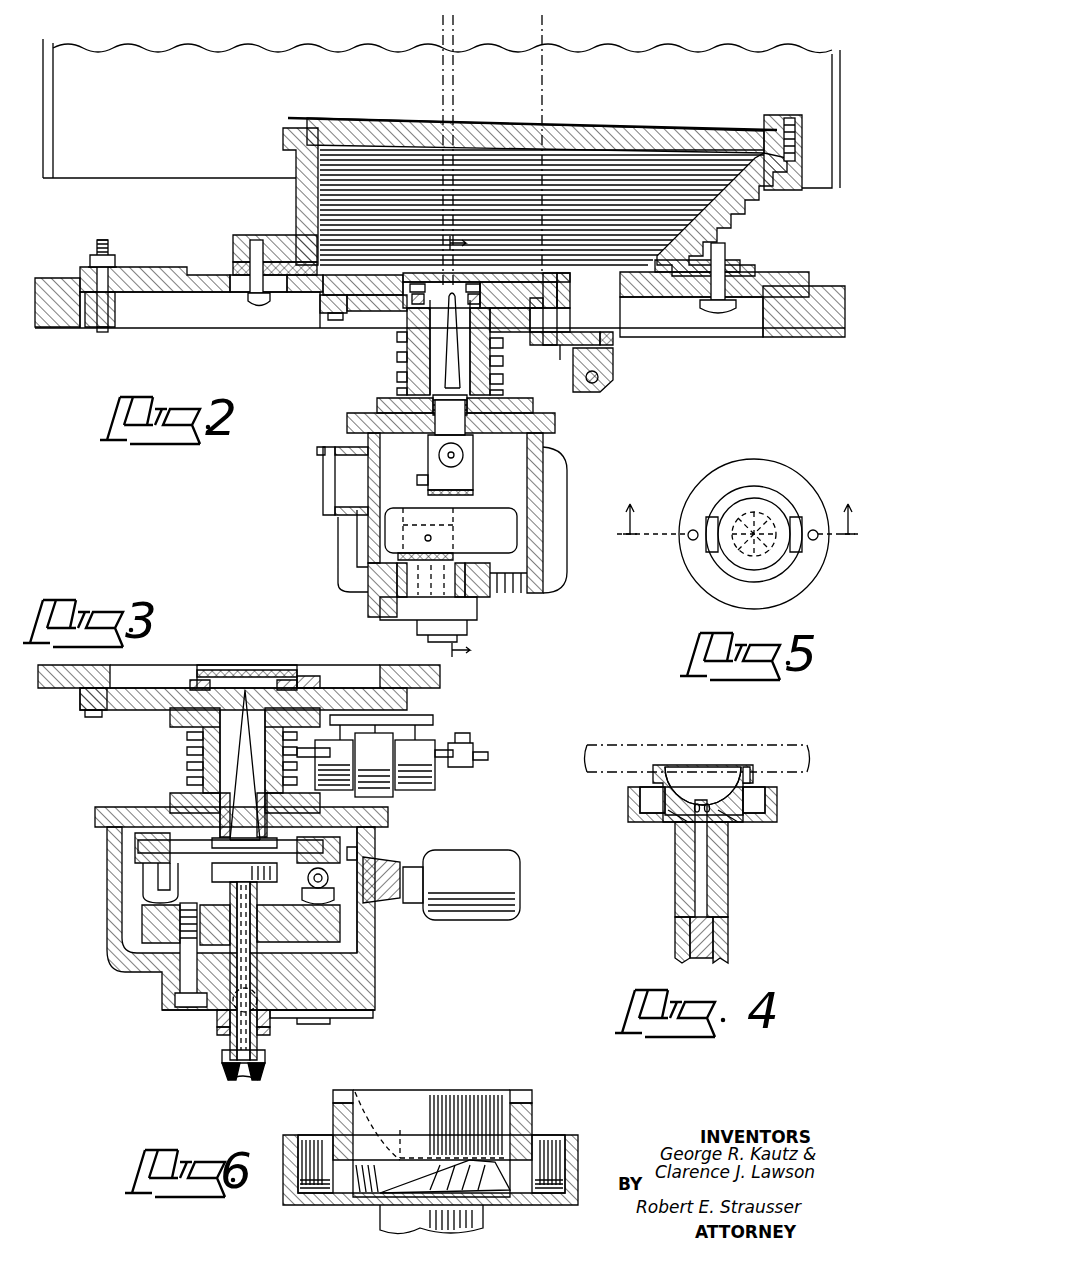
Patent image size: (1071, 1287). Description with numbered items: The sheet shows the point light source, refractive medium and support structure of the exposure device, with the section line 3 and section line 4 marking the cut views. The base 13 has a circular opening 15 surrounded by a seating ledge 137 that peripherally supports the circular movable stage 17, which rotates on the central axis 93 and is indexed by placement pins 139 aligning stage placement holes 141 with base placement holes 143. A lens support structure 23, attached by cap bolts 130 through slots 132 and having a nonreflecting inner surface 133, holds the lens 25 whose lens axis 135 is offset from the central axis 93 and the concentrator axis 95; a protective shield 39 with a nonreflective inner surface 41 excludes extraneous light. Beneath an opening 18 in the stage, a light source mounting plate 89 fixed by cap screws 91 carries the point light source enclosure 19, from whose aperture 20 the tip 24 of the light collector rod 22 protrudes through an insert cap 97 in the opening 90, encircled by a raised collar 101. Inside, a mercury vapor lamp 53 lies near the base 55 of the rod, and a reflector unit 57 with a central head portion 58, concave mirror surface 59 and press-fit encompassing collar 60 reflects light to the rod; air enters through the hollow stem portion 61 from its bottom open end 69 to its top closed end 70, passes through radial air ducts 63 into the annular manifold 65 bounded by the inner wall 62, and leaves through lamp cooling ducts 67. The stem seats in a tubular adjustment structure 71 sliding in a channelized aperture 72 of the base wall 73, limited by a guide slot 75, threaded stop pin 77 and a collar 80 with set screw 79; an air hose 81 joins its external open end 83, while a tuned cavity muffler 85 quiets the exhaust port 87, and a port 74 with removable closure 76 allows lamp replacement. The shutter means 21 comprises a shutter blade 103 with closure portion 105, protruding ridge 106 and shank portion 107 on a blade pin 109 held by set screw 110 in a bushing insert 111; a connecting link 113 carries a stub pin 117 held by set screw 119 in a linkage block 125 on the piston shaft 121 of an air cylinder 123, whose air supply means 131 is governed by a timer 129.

In FIG. 2, the section line 3— 3 is at (469, 447).
In FIG. 5, the section line 4— 4 is at (737, 509).
In FIG. 2, the base 13 is at (58, 278).
In FIG. 2, the circular opening 15 is at (174, 330).
In FIG. 2, the movable stage 17 is at (168, 260).
In FIG. 3, the movable stage 17 is at (55, 696).
In FIG. 2, the opening 18 is at (352, 300).
In FIG. 3, the opening 18 is at (120, 676).
In FIG. 2, the point light source enclosure 19 is at (318, 531).
In FIG. 3, the point light source enclosure 19 is at (77, 865).
In FIG. 3, the aperture 20 is at (248, 688).
In FIG. 2, the shutter means 21 is at (640, 368).
In FIG. 3, the shutter means 21 is at (275, 654).
In FIG. 2, the light collector rod 22 is at (447, 345).
In FIG. 3, the light collector rod 22 is at (240, 735).
In FIG. 2, the lens support structure 23 is at (281, 203).
In FIG. 3, the tip 24 is at (246, 686).
In FIG. 2, the lens 25 is at (685, 138).
In FIG. 2, the protective shield 39 is at (134, 43).
In FIG. 2, the nonreflective inner surface 41 is at (53, 82).
In FIG. 3, the mercury vapor lamp 53 is at (214, 840).
In FIG. 4, the mercury vapor lamp 53 is at (592, 742).
In FIG. 3, the base of the rod 55 is at (228, 815).
In FIG. 5, the reflector unit 57 is at (811, 462).
In FIG. 3, the reflector unit 57 is at (225, 887).
In FIG. 4, the reflector unit 57 is at (805, 795).
In FIG. 6, the reflector unit 57 is at (584, 1118).
In FIG. 5, the central head portion 58 is at (772, 475).
In FIG. 4, the central head portion 58 is at (760, 768).
In FIG. 6, the central head portion 58 is at (362, 1209).
In FIG. 4, the concave mirror surface 59 is at (676, 775).
In FIG. 6, the concave mirror surface 59 is at (380, 1120).
In FIG. 5, the encompassing collar 60 is at (716, 475).
In FIG. 4, the encompassing collar 60 is at (632, 828).
In FIG. 6, the encompassing collar 60 is at (300, 1209).
In FIG. 4, the hollow stem portion 61 is at (716, 864).
In FIG. 5, the inner wall of the collar 62 is at (785, 508).
In FIG. 6, the inner wall of the collar 62 is at (510, 1165).
In FIG. 5, the air ducts 63 is at (760, 500).
In FIG. 4, the air ducts 63 is at (672, 824).
In FIG. 6, the air ducts 63 is at (400, 1130).
In FIG. 4, the annular manifold 65 is at (735, 812).
In FIG. 6, the annular manifold 65 is at (490, 1180).
In FIG. 5, the lamp cooling ducts 67 is at (688, 538).
In FIG. 4, the lamp cooling ducts 67 is at (642, 803).
In FIG. 6, the lamp cooling ducts 67 is at (305, 1135).
In FIG. 4, the bottom open end 69 is at (713, 922).
In FIG. 4, the top closed end 70 is at (704, 800).
In FIG. 3, the tubular adjustment structure 71 is at (230, 1044).
In FIG. 4, the tubular adjustment structure 71 is at (677, 934).
In FIG. 6, the tubular adjustment structure 71 is at (385, 1222).
In FIG. 3, the channelized aperture 72 is at (262, 978).
In FIG. 3, the base wall 73 is at (365, 976).
In FIG. 2, the port 74 is at (345, 470).
In FIG. 3, the guide slot 75 is at (272, 1012).
In FIG. 2, the removable closure 76 is at (326, 492).
In FIG. 3, the threaded stop pin 77 is at (272, 1030).
In FIG. 3, the set screw 79 is at (215, 1030).
In FIG. 3, the collar 80 is at (262, 1050).
In FIG. 3, the air hose 81 is at (260, 1080).
In FIG. 3, the external open end 83 is at (230, 1078).
In FIG. 3, the tuned cavity muffler 85 is at (460, 850).
In FIG. 3, the exhaust port 87 is at (385, 860).
In FIG. 2, the light source mounting plate 89 is at (320, 306).
In FIG. 3, the light source mounting plate 89 is at (78, 712).
In FIG. 3, the opening in the mounting plate 90 is at (290, 690).
In FIG. 2, the cap screws 91 is at (328, 322).
In FIG. 3, the cap screws 91 is at (92, 718).
In FIG. 2, the central axis 93 is at (443, 42).
In FIG. 2, the concentrator axis 95 is at (454, 44).
In FIG. 2, the insert cap 97 is at (470, 290).
In FIG. 3, the insert cap 97 is at (268, 692).
In FIG. 2, the raised collar 101 is at (410, 296).
In FIG. 3, the raised collar 101 is at (190, 678).
In FIG. 2, the shutter blade 103 is at (454, 290).
In FIG. 3, the shutter blade 103 is at (253, 663).
In FIG. 2, the closure portion 105 is at (478, 300).
In FIG. 2, the protruding ridge 106 is at (408, 279).
In FIG. 3, the protruding ridge 106 is at (290, 672).
In FIG. 2, the shank portion 107 is at (500, 290).
In FIG. 2, the blade pin 109 is at (548, 340).
In FIG. 2, the set screw 110 is at (571, 286).
In FIG. 2, the bushing insert 111 is at (560, 324).
In FIG. 2, the connecting link 113 is at (562, 348).
In FIG. 2, the stub pin 117 is at (628, 362).
In FIG. 2, the set screw 119 is at (614, 342).
In FIG. 2, the piston shaft 121 is at (594, 382).
In FIG. 3, the piston shaft 121 is at (300, 760).
In FIG. 3, the air cylinder 123 is at (443, 786).
In FIG. 2, the linkage block 125 is at (586, 382).
In FIG. 3, the timer 129 is at (475, 743).
In FIG. 2, the cap bolts 130 is at (259, 312).
In FIG. 3, the air supply means 131 is at (488, 758).
In FIG. 2, the slots 132 is at (248, 285).
In FIG. 2, the inner surface 133 is at (333, 175).
In FIG. 2, the lens axis 135 is at (543, 40).
In FIG. 2, the seating ledge 137 is at (84, 330).
In FIG. 2, the placement pins 139 is at (102, 240).
In FIG. 2, the stage placement holes 141 is at (115, 266).
In FIG. 2, the base placement holes 143 is at (112, 310).